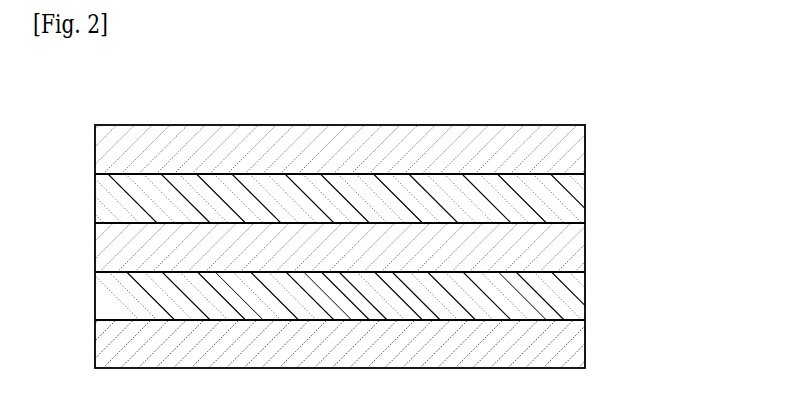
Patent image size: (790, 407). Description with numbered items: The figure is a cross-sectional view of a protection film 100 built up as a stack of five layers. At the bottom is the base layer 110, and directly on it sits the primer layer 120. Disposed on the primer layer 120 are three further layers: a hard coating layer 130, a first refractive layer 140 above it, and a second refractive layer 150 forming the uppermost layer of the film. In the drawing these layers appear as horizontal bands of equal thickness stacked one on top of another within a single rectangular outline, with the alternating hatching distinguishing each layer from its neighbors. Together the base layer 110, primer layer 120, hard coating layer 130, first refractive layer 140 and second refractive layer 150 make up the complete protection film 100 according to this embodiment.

The protection film 100 is at (361, 82).
The base layer 110 is at (585, 342).
The primer layer 120 is at (585, 293).
The hard coating layer 130 is at (585, 242).
The first refractive layer 140 is at (585, 193).
The second refractive layer 150 is at (585, 145).